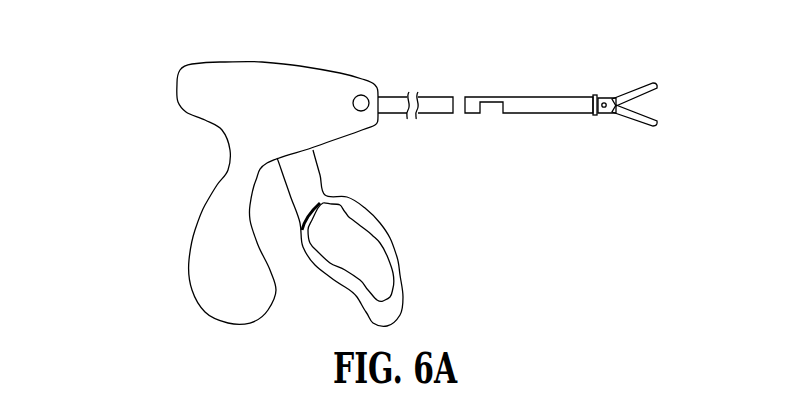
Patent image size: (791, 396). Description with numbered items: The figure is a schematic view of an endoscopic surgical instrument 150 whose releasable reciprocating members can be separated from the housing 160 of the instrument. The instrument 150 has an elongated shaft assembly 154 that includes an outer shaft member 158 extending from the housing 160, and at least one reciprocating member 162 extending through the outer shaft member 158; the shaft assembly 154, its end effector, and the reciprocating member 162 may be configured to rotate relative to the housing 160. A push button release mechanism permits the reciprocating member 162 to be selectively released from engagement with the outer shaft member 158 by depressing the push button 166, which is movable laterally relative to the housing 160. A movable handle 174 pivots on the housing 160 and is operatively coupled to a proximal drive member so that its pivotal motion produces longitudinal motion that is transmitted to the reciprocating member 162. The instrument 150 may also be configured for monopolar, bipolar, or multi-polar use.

The instrument 150 is at (140, 51).
The elongated shaft assembly 154 is at (490, 38).
The outer shaft member 158 is at (395, 103).
The housing 160 is at (298, 82).
The reciprocating member 162 is at (513, 103).
The push button 166 is at (363, 110).
The movable handle 174 is at (387, 250).